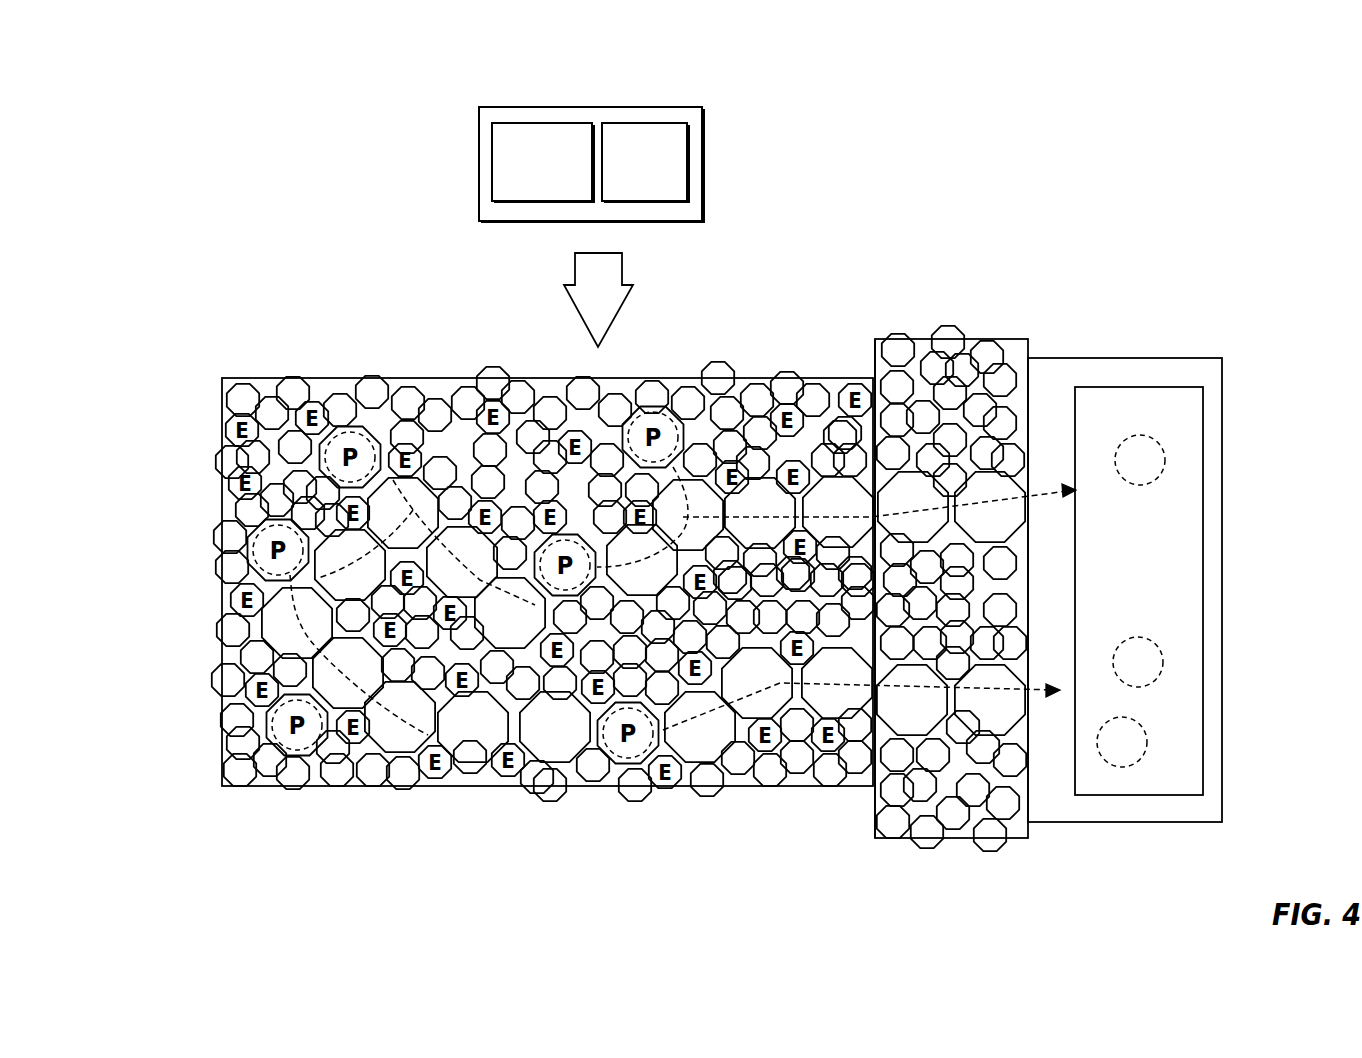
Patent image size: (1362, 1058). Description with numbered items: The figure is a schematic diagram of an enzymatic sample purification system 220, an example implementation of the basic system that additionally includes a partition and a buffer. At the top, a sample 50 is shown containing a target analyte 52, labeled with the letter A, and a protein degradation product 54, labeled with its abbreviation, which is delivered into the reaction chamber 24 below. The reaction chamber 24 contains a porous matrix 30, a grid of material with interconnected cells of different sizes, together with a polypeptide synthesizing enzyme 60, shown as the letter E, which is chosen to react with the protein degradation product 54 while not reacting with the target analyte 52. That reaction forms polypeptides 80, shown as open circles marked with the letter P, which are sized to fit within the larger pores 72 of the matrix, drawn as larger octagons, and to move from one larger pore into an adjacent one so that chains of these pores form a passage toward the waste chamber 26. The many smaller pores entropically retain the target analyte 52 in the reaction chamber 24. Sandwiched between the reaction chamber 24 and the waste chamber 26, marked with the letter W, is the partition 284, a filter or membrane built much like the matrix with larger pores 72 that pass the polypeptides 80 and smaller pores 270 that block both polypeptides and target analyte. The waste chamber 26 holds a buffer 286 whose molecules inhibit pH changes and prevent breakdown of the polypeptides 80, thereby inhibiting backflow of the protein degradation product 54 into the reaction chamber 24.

The enzymatic sample purification system 220 is at (188, 292).
The reaction chamber 24 is at (232, 378).
The porous matrix 30 is at (661, 376).
The sample 50 is at (478, 143).
The target analyte 52 is at (555, 122).
The protein degradation product 54 is at (672, 122).
The polypeptide synthesizing enzyme 60 is at (238, 482).
The polypeptides 80 is at (368, 438).
The smaller pores 270 is at (903, 338).
The partition 284 is at (1013, 338).
The larger pores 72 is at (878, 470).
The waste chamber 26 is at (1215, 357).
The buffer 286 is at (1165, 386).